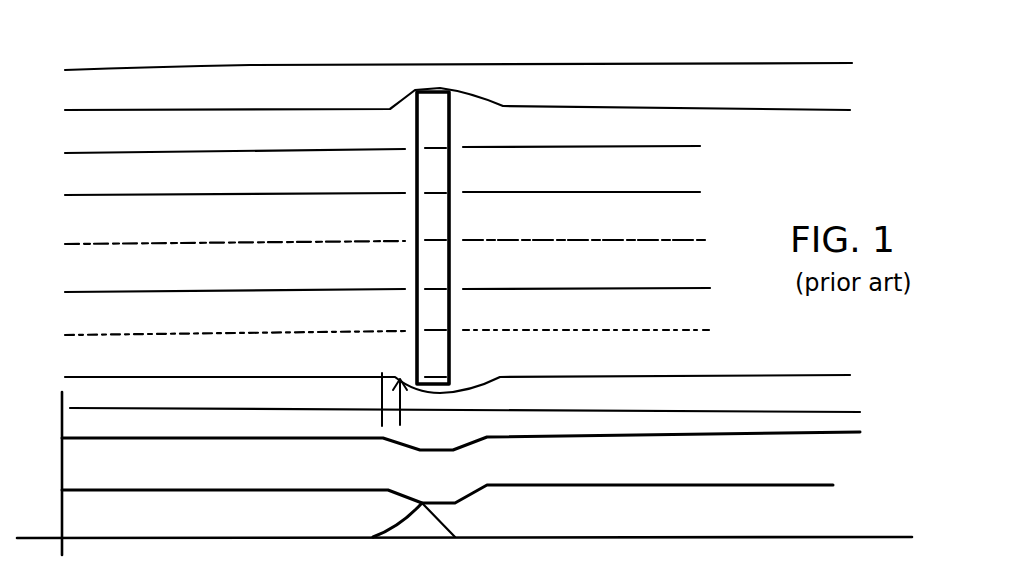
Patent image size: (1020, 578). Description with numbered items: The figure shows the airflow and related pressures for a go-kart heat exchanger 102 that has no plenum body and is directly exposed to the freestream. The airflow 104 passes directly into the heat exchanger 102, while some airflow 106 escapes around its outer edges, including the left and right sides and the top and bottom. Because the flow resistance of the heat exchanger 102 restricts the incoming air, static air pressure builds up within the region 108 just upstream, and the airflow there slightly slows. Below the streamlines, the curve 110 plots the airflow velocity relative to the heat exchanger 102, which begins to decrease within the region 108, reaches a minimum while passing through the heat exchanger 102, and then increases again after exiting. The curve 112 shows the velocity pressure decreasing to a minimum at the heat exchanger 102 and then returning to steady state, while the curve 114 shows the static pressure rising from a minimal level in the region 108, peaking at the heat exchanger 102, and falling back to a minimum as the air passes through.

The heat exchanger 102 is at (438, 127).
The airflow 104 is at (248, 142).
The airflow 106 is at (405, 91).
The region 108 is at (420, 430).
The curve 110 is at (557, 440).
The curve 112 is at (630, 482).
The curve 114 is at (443, 522).